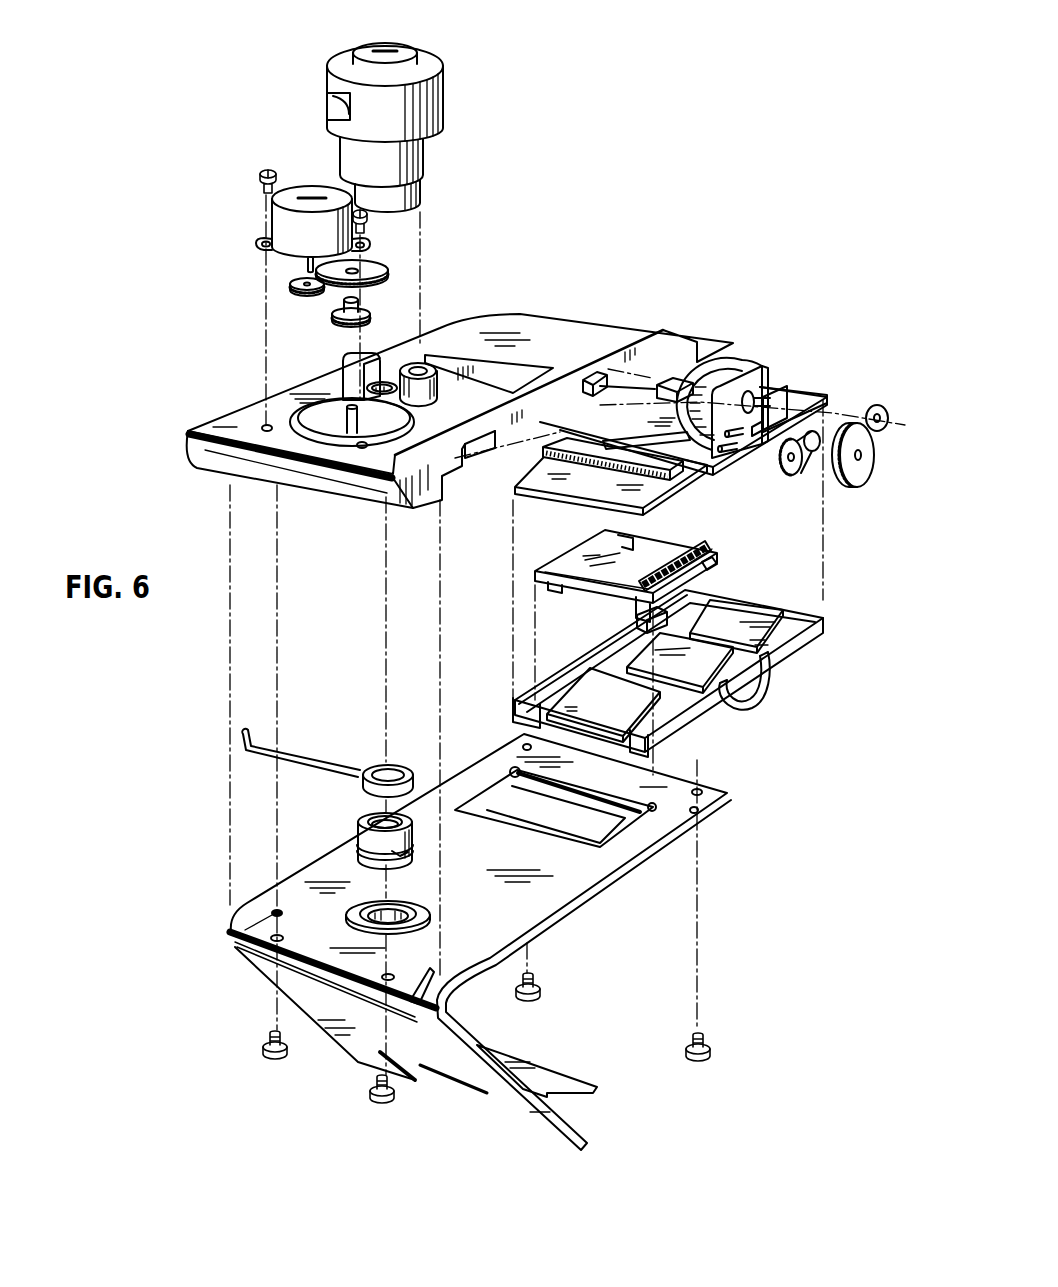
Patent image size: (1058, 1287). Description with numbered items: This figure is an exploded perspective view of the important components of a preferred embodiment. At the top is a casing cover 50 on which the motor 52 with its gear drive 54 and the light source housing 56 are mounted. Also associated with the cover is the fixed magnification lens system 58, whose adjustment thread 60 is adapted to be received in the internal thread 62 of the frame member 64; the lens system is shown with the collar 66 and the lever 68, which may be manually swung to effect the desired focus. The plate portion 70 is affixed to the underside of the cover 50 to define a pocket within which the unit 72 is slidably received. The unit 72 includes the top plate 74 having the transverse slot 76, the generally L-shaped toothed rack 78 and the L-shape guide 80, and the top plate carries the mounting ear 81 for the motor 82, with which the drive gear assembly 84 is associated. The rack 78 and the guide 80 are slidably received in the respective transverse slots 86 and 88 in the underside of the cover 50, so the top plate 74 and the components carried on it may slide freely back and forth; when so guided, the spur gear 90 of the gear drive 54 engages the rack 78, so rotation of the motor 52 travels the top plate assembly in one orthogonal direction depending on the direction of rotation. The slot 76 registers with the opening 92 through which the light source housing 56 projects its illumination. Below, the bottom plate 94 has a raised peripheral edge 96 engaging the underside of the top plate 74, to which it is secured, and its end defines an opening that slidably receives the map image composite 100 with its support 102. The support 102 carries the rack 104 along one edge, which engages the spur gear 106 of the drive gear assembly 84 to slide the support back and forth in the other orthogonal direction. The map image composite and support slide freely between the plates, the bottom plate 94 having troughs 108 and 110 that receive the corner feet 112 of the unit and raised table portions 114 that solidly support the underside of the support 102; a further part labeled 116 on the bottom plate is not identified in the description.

The casing cover 50 is at (591, 325).
The motor 52 is at (311, 189).
The gear drive 54 is at (383, 264).
The light source housing 56 is at (449, 108).
The fixed magnification lens system 58 is at (424, 838).
The adjustment thread 60 is at (422, 862).
The internal thread 62 is at (412, 906).
The frame member 64 is at (591, 896).
The collar 66 is at (369, 765).
The lever 68 is at (300, 754).
The plate portion 70 is at (698, 812).
The unit 72 is at (810, 380).
The top plate 74 is at (621, 430).
The transverse slot 76 is at (714, 458).
The toothed rack 78 is at (598, 472).
The L-shape guide 80 is at (774, 392).
The mounting ear 81 is at (762, 366).
The motor 82 is at (724, 362).
The drive gear assembly 84 is at (858, 412).
The transverse slot 86 is at (473, 448).
The transverse slot 88 is at (593, 376).
The spur gear 90 is at (363, 310).
The opening 92 is at (397, 368).
The bottom plate 94 is at (785, 599).
The raised peripheral edge 96 is at (582, 660).
The map image composite 100 is at (659, 533).
The support 102 is at (713, 549).
The rack 104 is at (703, 570).
The spur gear 106 is at (797, 477).
The trough 108 is at (513, 722).
The trough 110 is at (647, 749).
The corner feet 112 is at (545, 587).
The raised table portions 114 is at (645, 700).
The spring clip 116 is at (717, 690).